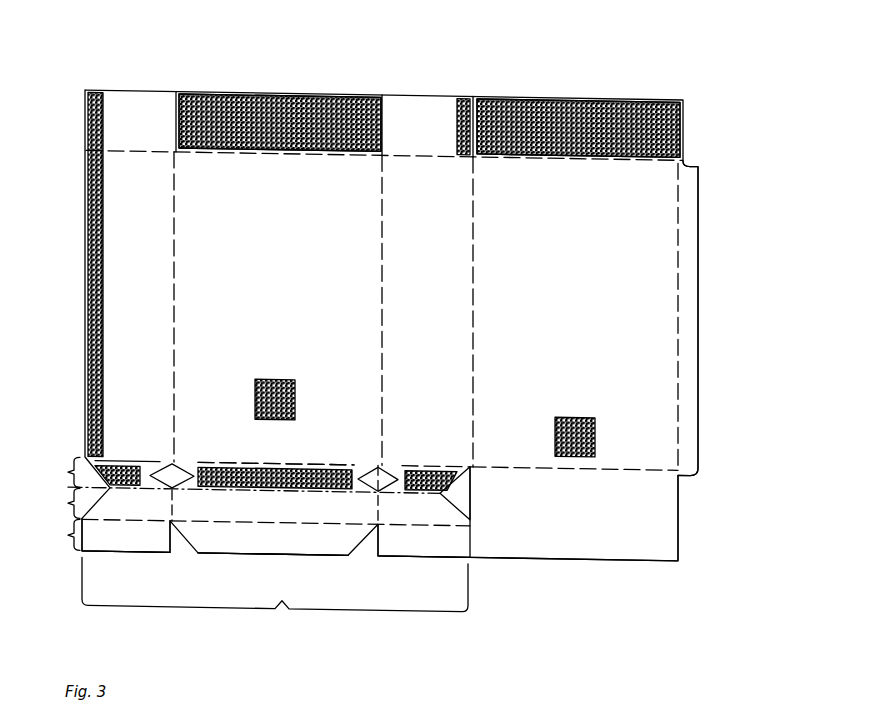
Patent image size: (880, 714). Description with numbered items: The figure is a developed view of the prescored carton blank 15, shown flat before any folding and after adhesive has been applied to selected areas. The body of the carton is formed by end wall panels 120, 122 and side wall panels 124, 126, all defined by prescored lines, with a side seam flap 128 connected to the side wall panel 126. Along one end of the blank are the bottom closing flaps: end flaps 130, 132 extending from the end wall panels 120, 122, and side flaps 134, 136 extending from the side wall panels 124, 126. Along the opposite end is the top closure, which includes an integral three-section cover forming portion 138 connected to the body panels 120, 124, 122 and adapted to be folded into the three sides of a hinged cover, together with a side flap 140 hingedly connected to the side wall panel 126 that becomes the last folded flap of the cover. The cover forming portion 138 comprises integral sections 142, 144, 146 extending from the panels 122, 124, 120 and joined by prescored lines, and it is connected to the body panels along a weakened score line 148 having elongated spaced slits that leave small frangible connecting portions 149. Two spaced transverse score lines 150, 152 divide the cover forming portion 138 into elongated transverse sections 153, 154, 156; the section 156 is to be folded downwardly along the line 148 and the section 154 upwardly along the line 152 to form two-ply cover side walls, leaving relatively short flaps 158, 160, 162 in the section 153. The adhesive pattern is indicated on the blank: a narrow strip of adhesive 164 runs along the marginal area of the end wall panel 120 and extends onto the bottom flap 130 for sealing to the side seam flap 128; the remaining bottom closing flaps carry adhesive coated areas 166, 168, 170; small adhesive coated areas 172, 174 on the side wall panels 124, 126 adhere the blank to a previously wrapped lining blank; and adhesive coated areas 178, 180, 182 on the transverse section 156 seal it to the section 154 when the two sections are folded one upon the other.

The carton blank 15 is at (122, 76).
The end wall panel 120 is at (384, 310).
The end wall panel 122 is at (436, 311).
The side wall panel 124 is at (328, 310).
The side wall panel 126 is at (619, 315).
The side seam flap 128 is at (700, 297).
The end flap 130 is at (148, 121).
The end flap 132 is at (427, 126).
The side flap 134 is at (262, 90).
The side flap 136 is at (557, 89).
The three-section cover forming portion 138 is at (275, 602).
The side flap 140 is at (574, 514).
The cover section 142 is at (425, 552).
The cover section 144 is at (290, 551).
The cover section 146 is at (145, 550).
The weakened score line 148 is at (310, 457).
The frangible connecting portions 149 is at (157, 459).
The transverse score line 150 is at (262, 522).
The transverse score line 152 is at (247, 490).
The transverse section 153 is at (66, 534).
The transverse section 154 is at (66, 502).
The transverse section 156 is at (66, 471).
The short flap 158 is at (424, 511).
The short flap 160 is at (273, 540).
The short flap 162 is at (126, 535).
The strip of adhesive 164 is at (86, 218).
The adhesive coated area 166 is at (652, 91).
The adhesive coated area 168 is at (465, 89).
The adhesive coated area 170 is at (316, 94).
The adhesive coated area 172 is at (279, 374).
The adhesive coated area 174 is at (575, 407).
The adhesive coated area 178 is at (443, 486).
The adhesive coated area 180 is at (312, 483).
The adhesive coated area 182 is at (124, 483).